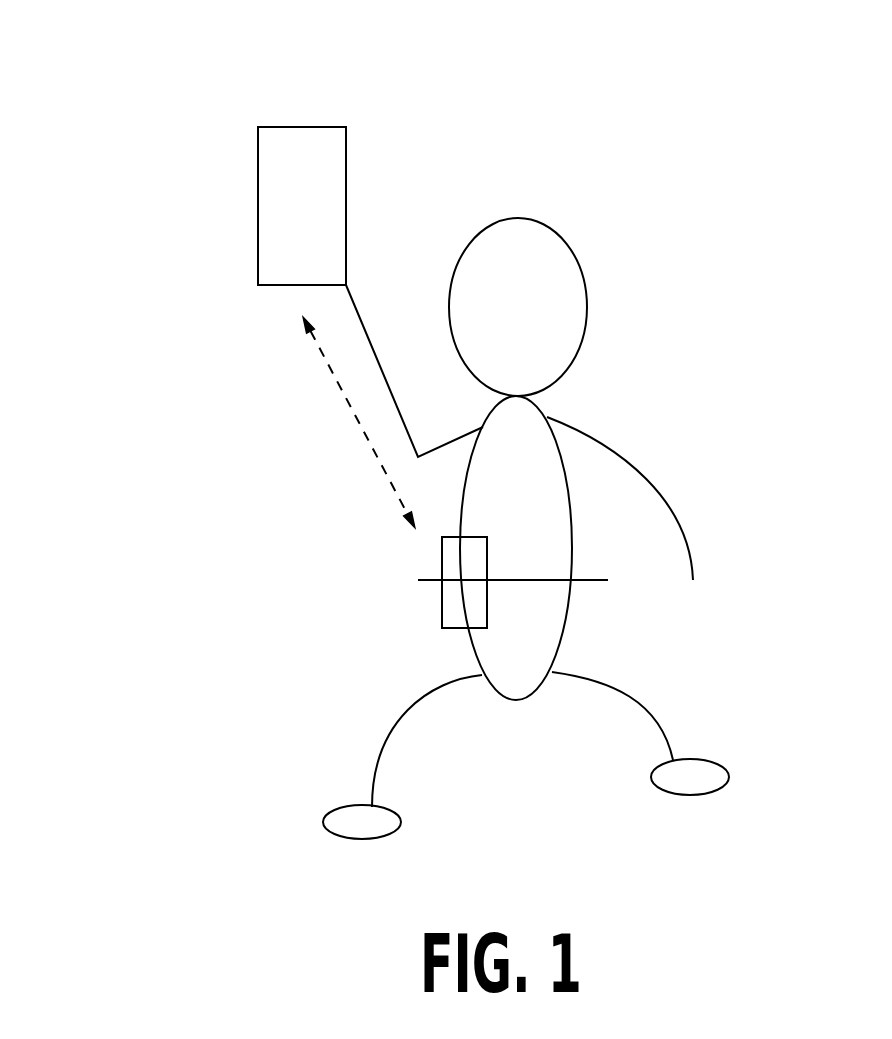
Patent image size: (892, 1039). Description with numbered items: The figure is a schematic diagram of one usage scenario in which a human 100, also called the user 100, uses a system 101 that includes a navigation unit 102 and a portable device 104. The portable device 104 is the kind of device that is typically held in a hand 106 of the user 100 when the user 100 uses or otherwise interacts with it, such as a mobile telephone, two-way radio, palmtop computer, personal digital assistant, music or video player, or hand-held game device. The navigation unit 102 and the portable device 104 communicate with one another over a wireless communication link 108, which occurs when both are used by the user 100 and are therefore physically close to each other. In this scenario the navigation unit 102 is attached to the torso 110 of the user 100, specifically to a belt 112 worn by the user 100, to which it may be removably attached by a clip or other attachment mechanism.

The human 100 is at (650, 251).
The system 101 is at (231, 360).
The navigation unit 102 is at (443, 605).
The portable device 104 is at (330, 120).
The hand 106 is at (382, 265).
The wireless communication link 108 is at (362, 423).
The torso 110 is at (570, 508).
The belt 112 is at (538, 582).